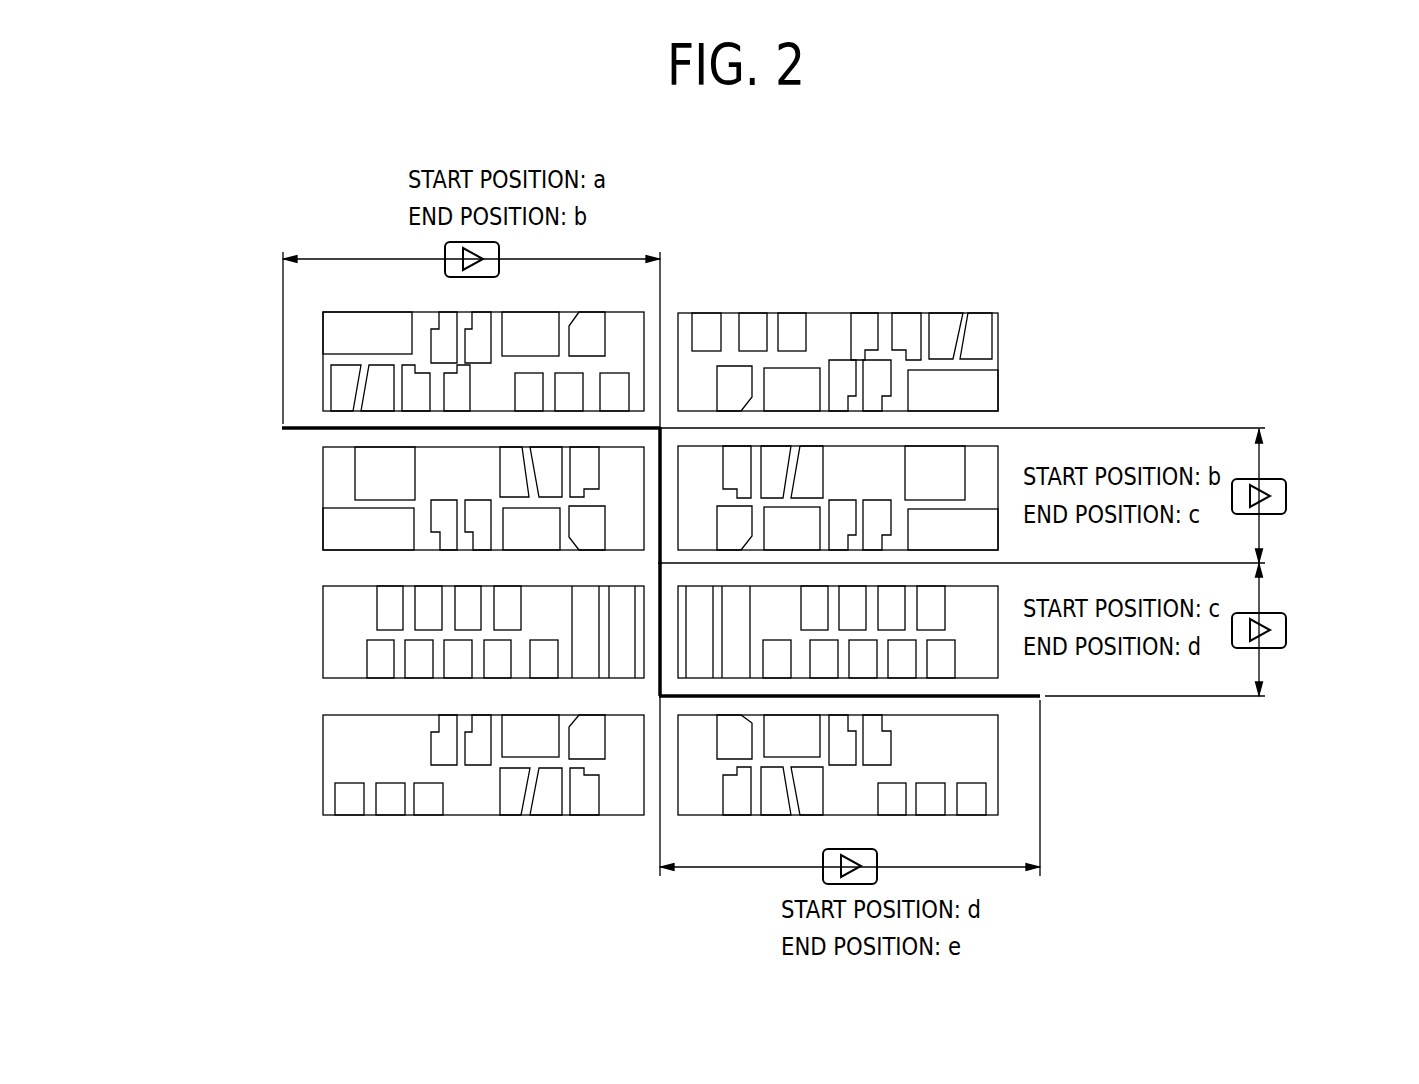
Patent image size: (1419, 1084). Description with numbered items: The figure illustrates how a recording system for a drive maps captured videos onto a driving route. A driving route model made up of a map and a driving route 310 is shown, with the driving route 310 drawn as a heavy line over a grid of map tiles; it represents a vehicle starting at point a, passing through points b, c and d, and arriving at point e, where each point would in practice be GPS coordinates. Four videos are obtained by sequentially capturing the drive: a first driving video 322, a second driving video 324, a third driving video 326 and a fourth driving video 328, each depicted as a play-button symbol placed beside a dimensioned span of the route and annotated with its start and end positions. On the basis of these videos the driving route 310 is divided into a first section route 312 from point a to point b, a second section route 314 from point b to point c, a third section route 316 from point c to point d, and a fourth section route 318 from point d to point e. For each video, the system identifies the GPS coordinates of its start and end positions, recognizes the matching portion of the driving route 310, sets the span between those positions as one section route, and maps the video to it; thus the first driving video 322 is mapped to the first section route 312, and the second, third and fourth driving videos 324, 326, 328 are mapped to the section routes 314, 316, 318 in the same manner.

The driving route 310 is at (248, 418).
The first section route 312 is at (303, 434).
The second section route 314 is at (658, 522).
The third section route 316 is at (658, 651).
The fourth section route 318 is at (1017, 700).
The first driving video 322 is at (500, 265).
The second driving video 324 is at (1287, 494).
The third driving video 326 is at (1287, 628).
The fourth driving video 328 is at (822, 862).